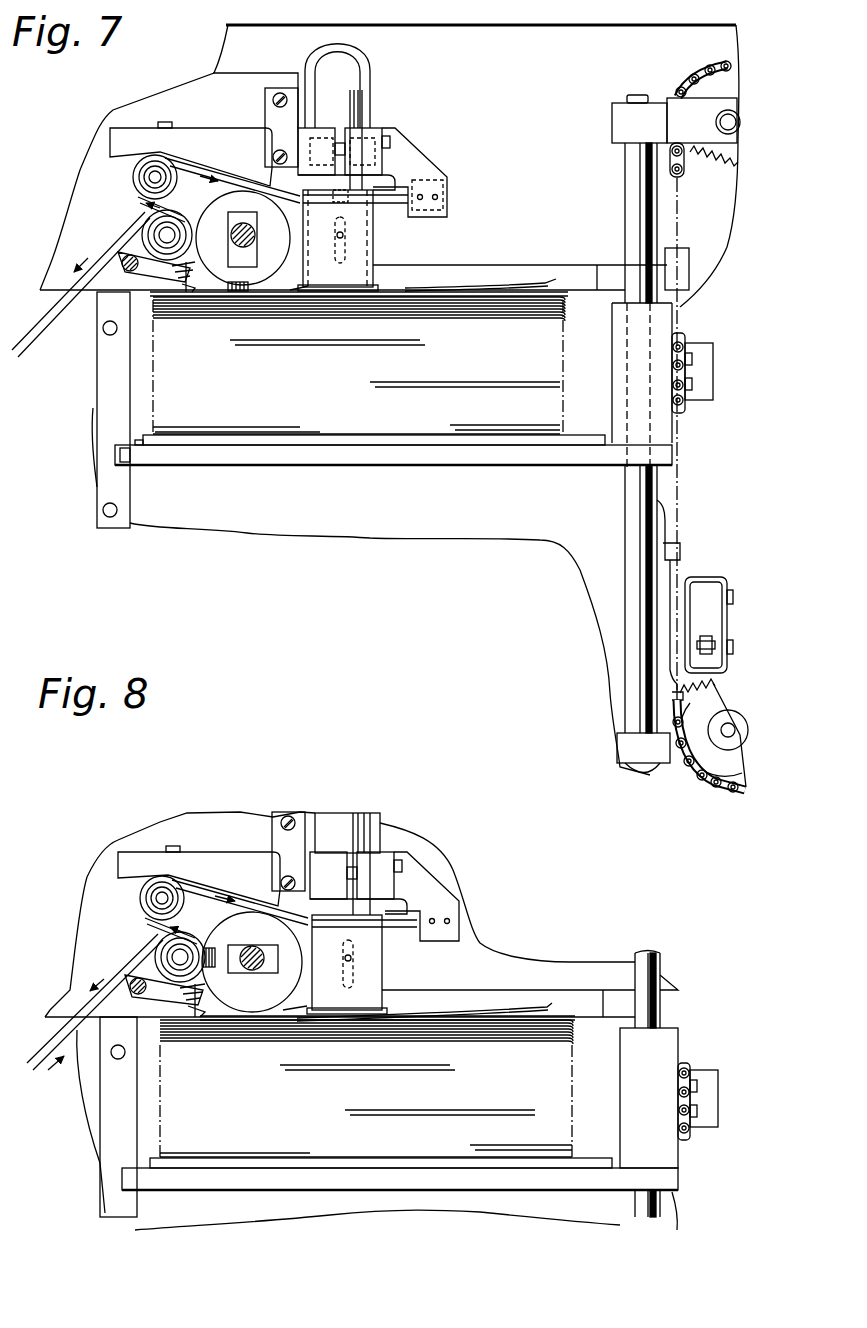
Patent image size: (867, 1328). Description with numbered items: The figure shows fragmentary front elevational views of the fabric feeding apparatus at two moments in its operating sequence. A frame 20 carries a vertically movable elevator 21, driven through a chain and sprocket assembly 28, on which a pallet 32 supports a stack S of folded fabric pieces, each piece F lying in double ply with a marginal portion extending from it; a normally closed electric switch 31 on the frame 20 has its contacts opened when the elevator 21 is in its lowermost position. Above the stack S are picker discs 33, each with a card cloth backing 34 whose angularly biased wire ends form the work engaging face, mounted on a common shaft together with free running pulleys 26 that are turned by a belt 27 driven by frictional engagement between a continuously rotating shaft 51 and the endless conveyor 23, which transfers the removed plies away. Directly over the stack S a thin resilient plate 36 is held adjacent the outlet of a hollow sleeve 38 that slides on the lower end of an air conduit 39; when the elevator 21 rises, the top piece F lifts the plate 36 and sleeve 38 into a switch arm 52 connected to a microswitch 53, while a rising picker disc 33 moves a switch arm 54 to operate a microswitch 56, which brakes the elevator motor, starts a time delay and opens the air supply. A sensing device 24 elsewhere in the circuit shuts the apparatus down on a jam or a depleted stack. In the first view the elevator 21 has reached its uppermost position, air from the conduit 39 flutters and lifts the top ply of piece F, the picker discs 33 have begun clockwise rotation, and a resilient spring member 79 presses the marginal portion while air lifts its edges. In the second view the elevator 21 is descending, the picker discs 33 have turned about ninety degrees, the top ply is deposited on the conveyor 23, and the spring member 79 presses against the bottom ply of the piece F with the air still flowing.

In FIG. 7, the frame 20 is at (192, 76).
In FIG. 8, the frame 20 is at (137, 822).
In FIG. 7, the elevator 21 is at (675, 462).
In FIG. 8, the elevator 21 is at (681, 1178).
In FIG. 7, the endless conveyor 23 is at (118, 246).
In FIG. 8, the endless conveyor 23 is at (138, 950).
In FIG. 7, the sensing device 24 is at (232, 222).
In FIG. 8, the sensing device 24 is at (277, 950).
In FIG. 7, the free running pulleys 26 is at (291, 214).
In FIG. 8, the free running pulleys 26 is at (302, 935).
In FIG. 7, the belt 27 is at (183, 158).
In FIG. 8, the belt 27 is at (195, 893).
In FIG. 7, the chain and sprocket assembly 28 is at (690, 74).
In FIG. 8, the chain and sprocket assembly 28 is at (690, 1065).
In FIG. 7, the electric switch 31 is at (706, 633).
In FIG. 7, the pallet 32 is at (600, 435).
In FIG. 8, the pallet 32 is at (598, 1158).
In FIG. 7, the picker discs 33 is at (290, 272).
In FIG. 8, the picker discs 33 is at (300, 988).
In FIG. 7, the card cloth backing 34 is at (246, 283).
In FIG. 8, the card cloth backing 34 is at (215, 965).
In FIG. 7, the resilient plate 36 is at (450, 290).
In FIG. 8, the resilient plate 36 is at (527, 1010).
In FIG. 7, the hollow sleeve 38 is at (375, 246).
In FIG. 8, the hollow sleeve 38 is at (383, 971).
In FIG. 7, the air conduit 39 is at (368, 66).
In FIG. 8, the air conduit 39 is at (350, 820).
In FIG. 7, the shaft 51 is at (155, 228).
In FIG. 8, the shaft 51 is at (180, 948).
In FIG. 7, the switch arm 52 is at (385, 205).
In FIG. 8, the switch arm 52 is at (398, 932).
In FIG. 7, the microswitch 53 is at (448, 190).
In FIG. 7, the switch arm 54 is at (272, 186).
In FIG. 8, the switch arm 54 is at (278, 906).
In FIG. 7, the microswitch 56 is at (395, 150).
In FIG. 8, the microswitch 56 is at (384, 896).
In FIG. 7, the resilient spring member 79 is at (186, 294).
In FIG. 8, the resilient spring member 79 is at (186, 1020).
In FIG. 7, the fabric piece F is at (565, 278).
In FIG. 8, the fabric piece F is at (458, 1016).
In FIG. 7, the fabric stack S is at (565, 334).
In FIG. 8, the fabric stack S is at (574, 1076).